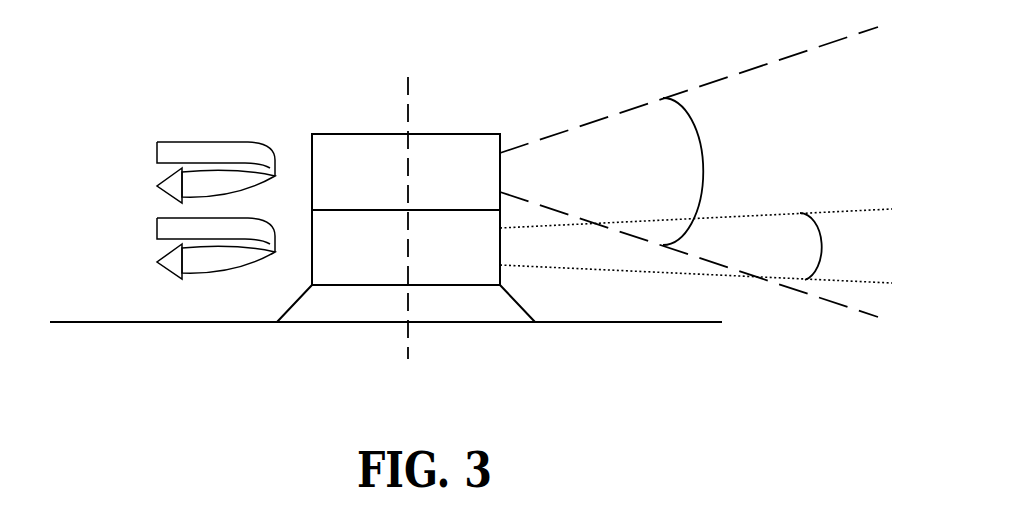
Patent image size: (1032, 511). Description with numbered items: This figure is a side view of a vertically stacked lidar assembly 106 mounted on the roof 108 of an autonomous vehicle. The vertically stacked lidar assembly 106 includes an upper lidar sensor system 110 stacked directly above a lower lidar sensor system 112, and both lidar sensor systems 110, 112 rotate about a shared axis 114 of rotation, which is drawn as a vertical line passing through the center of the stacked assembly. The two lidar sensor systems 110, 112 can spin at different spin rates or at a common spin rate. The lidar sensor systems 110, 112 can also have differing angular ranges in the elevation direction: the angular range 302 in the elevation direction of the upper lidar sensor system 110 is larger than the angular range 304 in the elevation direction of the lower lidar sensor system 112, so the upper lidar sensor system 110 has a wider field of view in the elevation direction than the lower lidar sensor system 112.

The vertically stacked lidar assembly 106 is at (347, 96).
The roof 108 is at (632, 322).
The lidar sensor system 110 is at (450, 183).
The lidar sensor system 112 is at (450, 260).
The shared axis of rotation 114 is at (407, 100).
The angular range 302 is at (703, 170).
The angular range 304 is at (824, 243).